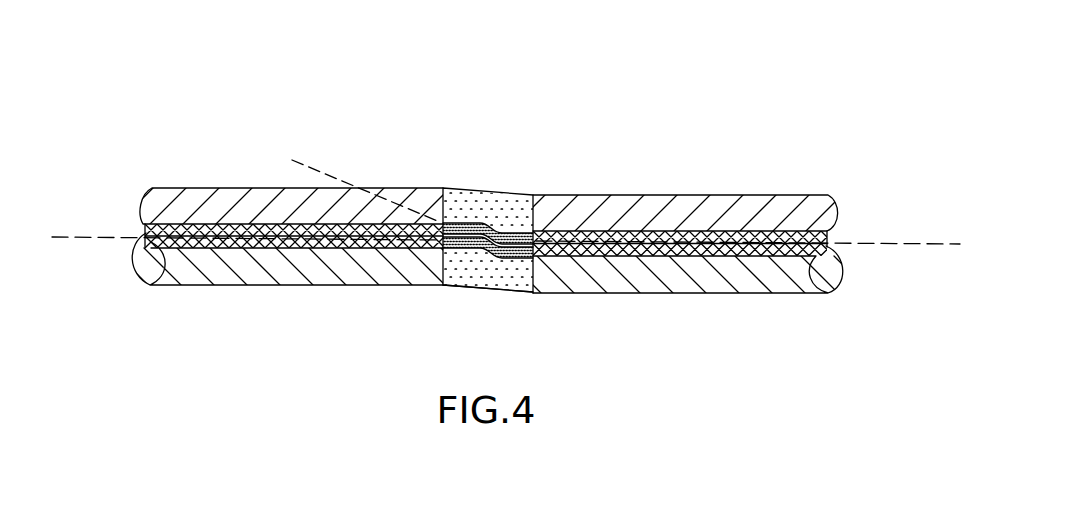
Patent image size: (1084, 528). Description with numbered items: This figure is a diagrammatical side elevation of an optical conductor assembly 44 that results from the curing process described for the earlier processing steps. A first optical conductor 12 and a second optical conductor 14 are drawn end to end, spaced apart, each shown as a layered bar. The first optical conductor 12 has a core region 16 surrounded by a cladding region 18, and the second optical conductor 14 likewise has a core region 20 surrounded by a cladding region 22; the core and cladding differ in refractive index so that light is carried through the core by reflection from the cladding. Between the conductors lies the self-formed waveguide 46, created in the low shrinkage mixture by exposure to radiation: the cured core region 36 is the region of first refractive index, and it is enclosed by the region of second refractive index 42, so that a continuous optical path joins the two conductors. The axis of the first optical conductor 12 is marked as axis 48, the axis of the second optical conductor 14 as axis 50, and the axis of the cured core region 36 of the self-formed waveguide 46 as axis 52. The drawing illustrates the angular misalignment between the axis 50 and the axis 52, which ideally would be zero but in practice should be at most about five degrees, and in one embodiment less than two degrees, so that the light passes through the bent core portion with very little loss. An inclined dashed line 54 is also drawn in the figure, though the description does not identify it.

The first optical conductor 12 is at (706, 239).
The second optical conductor 14 is at (311, 233).
The core region 16 is at (733, 231).
The cladding region 18 is at (793, 277).
The core region 20 is at (252, 248).
The cladding region 22 is at (178, 272).
The region of first refractive index 36 is at (480, 223).
The region of second refractive index 42 is at (490, 238).
The optical conductor assembly 44 is at (775, 63).
The self-formed waveguide 46 is at (503, 298).
The axis of the first optical conductor 48 is at (895, 244).
The axis of the second optical conductor 50 is at (67, 236).
The axis of the cured core region 52 is at (485, 256).
The inclined reference line 54 is at (314, 160).